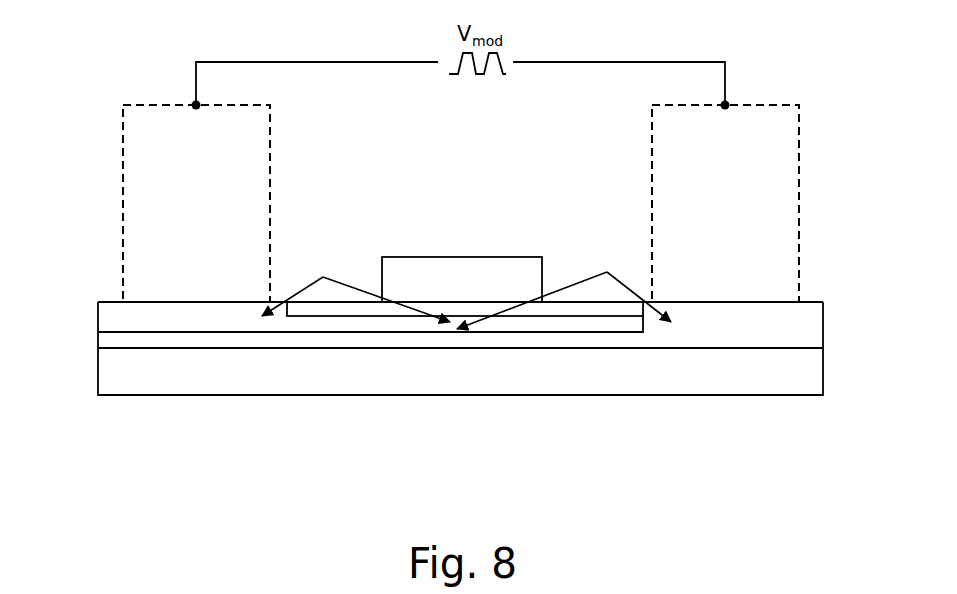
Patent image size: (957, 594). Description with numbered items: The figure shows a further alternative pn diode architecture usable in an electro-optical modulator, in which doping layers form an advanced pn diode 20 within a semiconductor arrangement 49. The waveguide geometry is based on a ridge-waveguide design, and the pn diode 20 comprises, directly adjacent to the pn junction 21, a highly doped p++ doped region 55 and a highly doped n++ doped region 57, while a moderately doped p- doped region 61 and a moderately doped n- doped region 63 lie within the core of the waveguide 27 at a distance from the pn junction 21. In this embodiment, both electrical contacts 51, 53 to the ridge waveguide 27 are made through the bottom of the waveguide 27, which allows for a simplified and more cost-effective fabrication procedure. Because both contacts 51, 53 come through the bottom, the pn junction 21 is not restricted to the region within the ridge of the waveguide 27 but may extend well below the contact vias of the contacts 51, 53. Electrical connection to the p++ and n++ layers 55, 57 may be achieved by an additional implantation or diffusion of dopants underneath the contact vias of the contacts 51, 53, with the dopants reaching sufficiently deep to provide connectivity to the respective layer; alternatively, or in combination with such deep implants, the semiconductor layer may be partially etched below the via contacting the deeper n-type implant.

The pn diode 20 is at (552, 271).
The pn junction 21 is at (457, 323).
The waveguide 27 is at (525, 245).
The semiconductor arrangement 49 is at (283, 296).
The electrical contact 51 is at (128, 157).
The electrical contact 53 is at (790, 155).
The p++ doped region 55 is at (337, 322).
The n++ doped region 57 is at (393, 342).
The p- doped region 61 is at (403, 267).
The n- doped region 63 is at (547, 380).